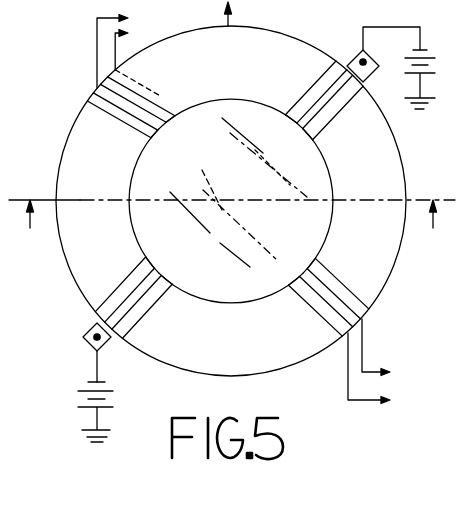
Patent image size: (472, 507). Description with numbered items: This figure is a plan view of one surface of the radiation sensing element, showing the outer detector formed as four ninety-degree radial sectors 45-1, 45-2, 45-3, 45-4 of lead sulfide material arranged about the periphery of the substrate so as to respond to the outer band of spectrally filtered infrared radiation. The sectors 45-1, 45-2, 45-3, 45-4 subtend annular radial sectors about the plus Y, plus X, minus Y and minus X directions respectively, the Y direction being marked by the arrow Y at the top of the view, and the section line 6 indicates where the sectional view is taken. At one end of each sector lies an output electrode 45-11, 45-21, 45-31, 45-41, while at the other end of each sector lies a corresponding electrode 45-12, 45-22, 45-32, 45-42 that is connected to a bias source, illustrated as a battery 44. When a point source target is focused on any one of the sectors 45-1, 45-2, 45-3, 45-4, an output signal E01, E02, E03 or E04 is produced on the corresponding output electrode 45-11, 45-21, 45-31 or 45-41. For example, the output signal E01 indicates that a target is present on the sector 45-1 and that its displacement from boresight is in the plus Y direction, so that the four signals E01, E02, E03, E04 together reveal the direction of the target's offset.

The battery 44 is at (260, 235).
The radial sector 45-1 is at (245, 66).
The radial sector 45-2 is at (392, 182).
The radial sector 45-3 is at (245, 368).
The radial sector 45-4 is at (115, 182).
The output electrode 45-11 is at (144, 85).
The electrode 45-12 is at (314, 84).
The output electrode 45-21 is at (324, 266).
The electrode 45-22 is at (321, 131).
The output electrode 45-31 is at (314, 311).
The electrode 45-32 is at (148, 312).
The output electrode 45-41 is at (142, 133).
The electrode 45-42 is at (141, 262).
The output signal E01 is at (137, 48).
The output signal E02 is at (392, 350).
The output signal E03 is at (386, 371).
The output signal E04 is at (129, 48).
The section line 6- 6 is at (231, 226).
The Y direction Y is at (247, 14).